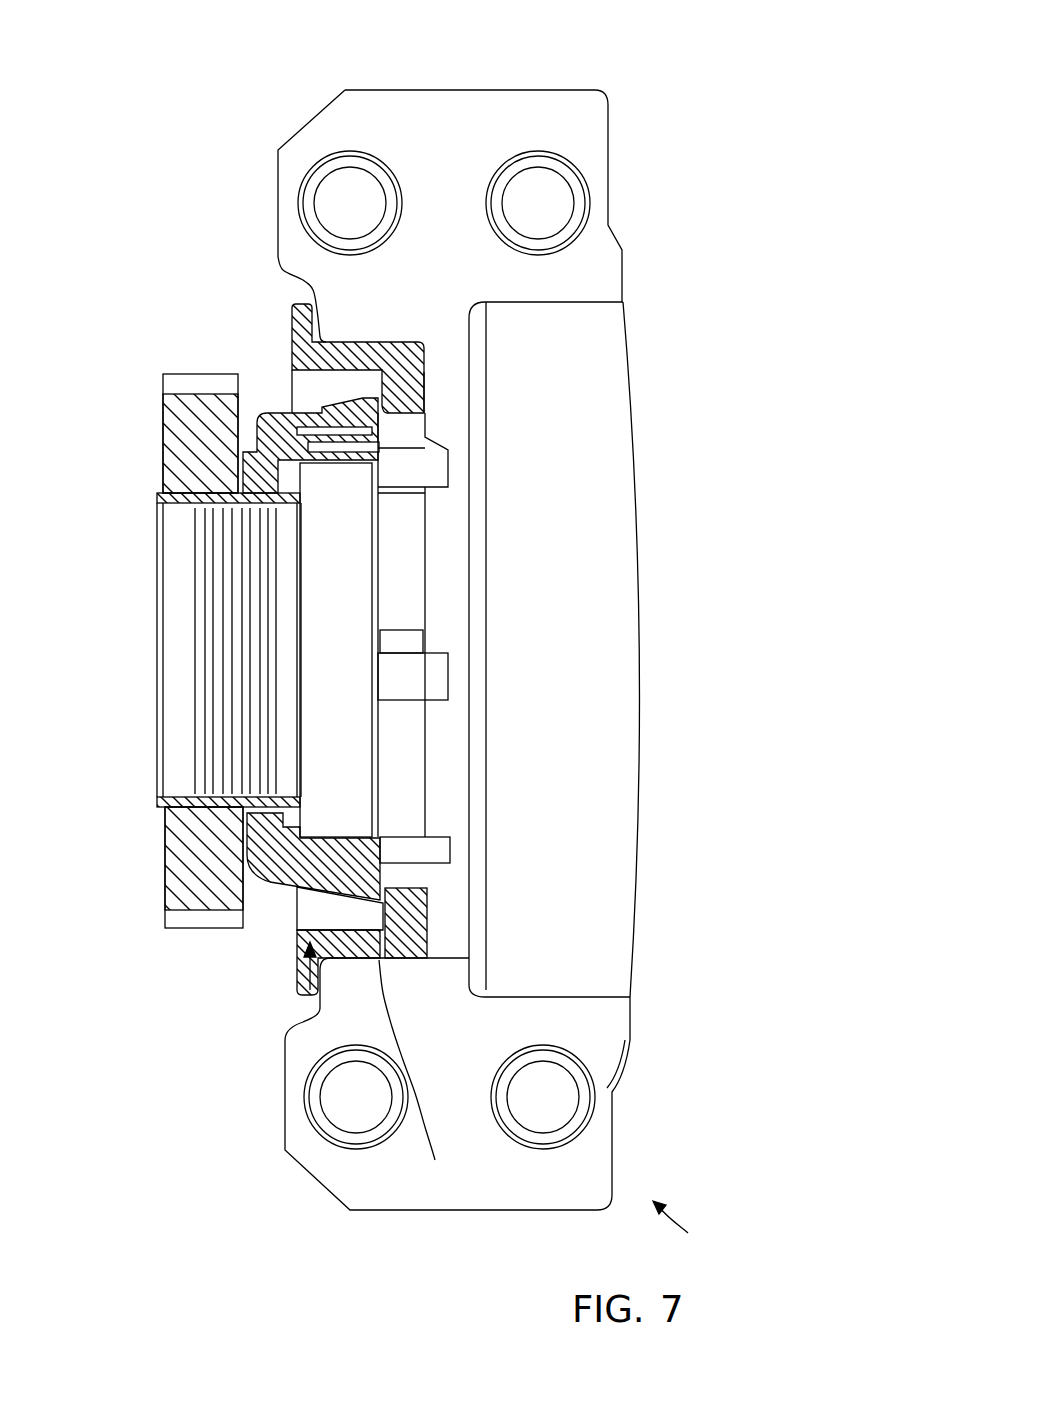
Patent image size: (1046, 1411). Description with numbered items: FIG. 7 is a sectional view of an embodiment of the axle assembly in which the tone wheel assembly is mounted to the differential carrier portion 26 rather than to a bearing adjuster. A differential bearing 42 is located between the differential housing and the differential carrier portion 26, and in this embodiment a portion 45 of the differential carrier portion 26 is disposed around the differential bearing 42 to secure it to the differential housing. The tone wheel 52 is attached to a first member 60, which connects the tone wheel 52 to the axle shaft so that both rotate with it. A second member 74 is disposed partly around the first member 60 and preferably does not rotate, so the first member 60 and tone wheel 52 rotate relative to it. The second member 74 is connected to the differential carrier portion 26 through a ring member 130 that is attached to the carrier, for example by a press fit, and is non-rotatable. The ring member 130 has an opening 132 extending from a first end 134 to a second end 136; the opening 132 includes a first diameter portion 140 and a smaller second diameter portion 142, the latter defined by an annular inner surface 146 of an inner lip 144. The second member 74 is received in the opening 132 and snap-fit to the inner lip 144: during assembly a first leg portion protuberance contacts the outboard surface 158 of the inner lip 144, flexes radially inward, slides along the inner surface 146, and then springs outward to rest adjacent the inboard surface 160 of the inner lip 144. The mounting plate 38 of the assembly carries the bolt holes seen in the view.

The differential carrier portion 26 is at (683, 1223).
The mounting plate 38 is at (312, 965).
The differential bearing 42 is at (592, 402).
The portion of the differential carrier portion 45 is at (537, 90).
The tone wheel 52 is at (183, 445).
The first member 60 is at (183, 650).
The second member 74 is at (335, 565).
The ring member 130 is at (347, 342).
The opening 132 is at (335, 912).
The first end 134 is at (300, 970).
The second end 136 is at (427, 943).
The first diameter portion 140 is at (435, 1160).
The second diameter portion 142 is at (428, 887).
The inner lip 144 is at (428, 927).
The inner surface of the inner lip 146 is at (427, 440).
The outboard surface of the inner lip 158 is at (390, 393).
The inboard surface of the inner lip 160 is at (425, 385).